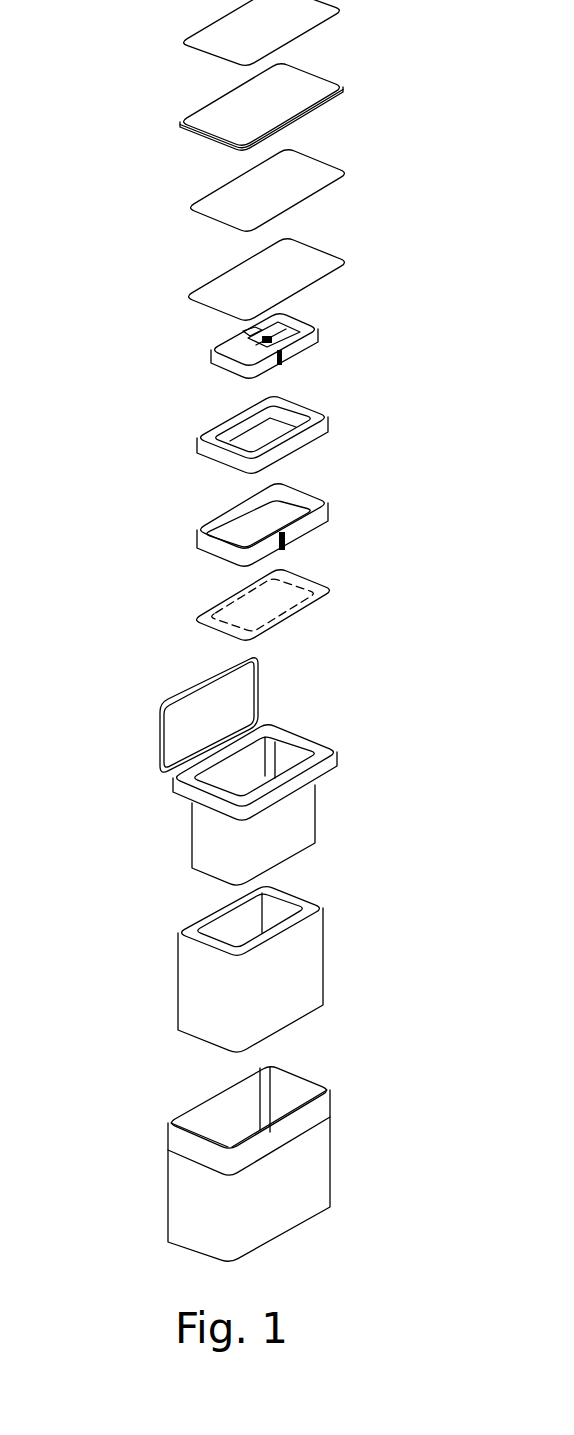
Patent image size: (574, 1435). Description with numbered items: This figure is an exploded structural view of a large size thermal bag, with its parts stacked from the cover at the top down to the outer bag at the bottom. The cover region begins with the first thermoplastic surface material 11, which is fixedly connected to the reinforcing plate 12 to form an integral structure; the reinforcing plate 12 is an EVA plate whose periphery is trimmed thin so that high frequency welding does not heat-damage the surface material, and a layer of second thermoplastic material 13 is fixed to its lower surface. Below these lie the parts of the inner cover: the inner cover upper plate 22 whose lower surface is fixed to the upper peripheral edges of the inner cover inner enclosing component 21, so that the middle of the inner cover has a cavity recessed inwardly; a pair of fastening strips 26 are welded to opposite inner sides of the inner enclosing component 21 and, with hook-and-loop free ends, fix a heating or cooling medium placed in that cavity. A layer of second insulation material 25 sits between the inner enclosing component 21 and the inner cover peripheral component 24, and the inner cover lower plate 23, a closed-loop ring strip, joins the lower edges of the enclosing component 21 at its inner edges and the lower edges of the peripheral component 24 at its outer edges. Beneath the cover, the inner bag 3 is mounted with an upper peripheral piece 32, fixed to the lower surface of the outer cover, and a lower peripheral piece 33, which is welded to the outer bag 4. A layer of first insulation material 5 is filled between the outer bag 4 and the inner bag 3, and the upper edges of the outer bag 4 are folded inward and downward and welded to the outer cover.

The first thermoplastic surface material 11 is at (193, 38).
The reinforcing plate 12 is at (193, 123).
The second thermoplastic material 13 is at (195, 208).
The inner cover upper plate 22 is at (195, 297).
The inner cover inner enclosing component 21 is at (241, 333).
The fastening strips 26 is at (300, 332).
The second insulation material 25 is at (205, 449).
The inner cover peripheral component 24 is at (197, 540).
The inner cover lower plate 23 is at (207, 623).
The upper peripheral piece 32 is at (158, 744).
The lower peripheral piece 33 is at (333, 772).
The inner bag 3 is at (247, 771).
The first insulation material 5 is at (187, 1002).
The outer bag 4 is at (172, 1210).